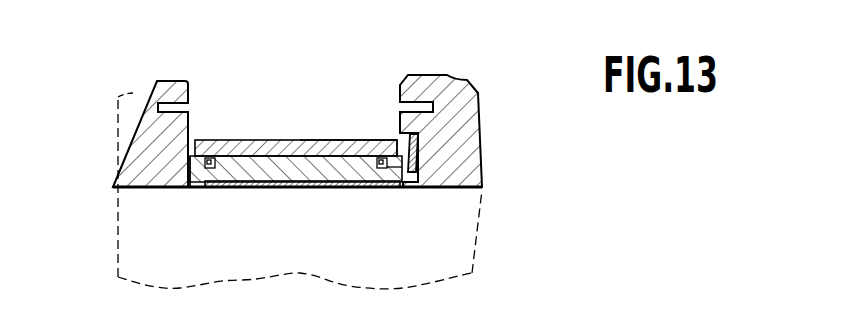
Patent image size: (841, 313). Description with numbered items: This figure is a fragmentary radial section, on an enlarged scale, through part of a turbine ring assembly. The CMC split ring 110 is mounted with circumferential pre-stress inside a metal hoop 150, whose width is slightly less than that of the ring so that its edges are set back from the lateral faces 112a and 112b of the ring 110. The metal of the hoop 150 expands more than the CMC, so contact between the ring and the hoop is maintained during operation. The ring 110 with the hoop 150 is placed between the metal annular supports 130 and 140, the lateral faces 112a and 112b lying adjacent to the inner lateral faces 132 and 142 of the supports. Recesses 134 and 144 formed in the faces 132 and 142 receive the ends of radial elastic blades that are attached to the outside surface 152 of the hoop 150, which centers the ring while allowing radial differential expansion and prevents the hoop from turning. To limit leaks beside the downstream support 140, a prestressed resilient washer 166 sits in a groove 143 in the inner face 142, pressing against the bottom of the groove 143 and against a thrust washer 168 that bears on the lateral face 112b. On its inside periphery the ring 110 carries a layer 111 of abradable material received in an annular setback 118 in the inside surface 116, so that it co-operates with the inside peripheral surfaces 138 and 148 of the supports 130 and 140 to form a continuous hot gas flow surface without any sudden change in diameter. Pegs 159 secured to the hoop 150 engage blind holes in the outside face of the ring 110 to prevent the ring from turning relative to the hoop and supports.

The split ring 110 is at (300, 170).
The layer of abradable material 111 is at (280, 189).
The lateral face 112a is at (160, 189).
The lateral face 112b is at (418, 189).
The inside surface 116 is at (200, 190).
The annular setback 118 is at (303, 189).
The annular support 130 is at (133, 125).
The inner lateral face 132 is at (207, 189).
The recess 134 is at (148, 97).
The inside peripheral surface 138 is at (140, 189).
The annular support 140 is at (457, 127).
The inner lateral face 142 is at (377, 188).
The groove 143 is at (407, 132).
The recess 144 is at (433, 107).
The inside peripheral surface 148 is at (453, 188).
The metal hoop 150 is at (233, 140).
The outside surface 152 is at (370, 138).
The peg 159 is at (218, 172).
The resilient washer 166 is at (420, 153).
The thrust washer 168 is at (357, 188).